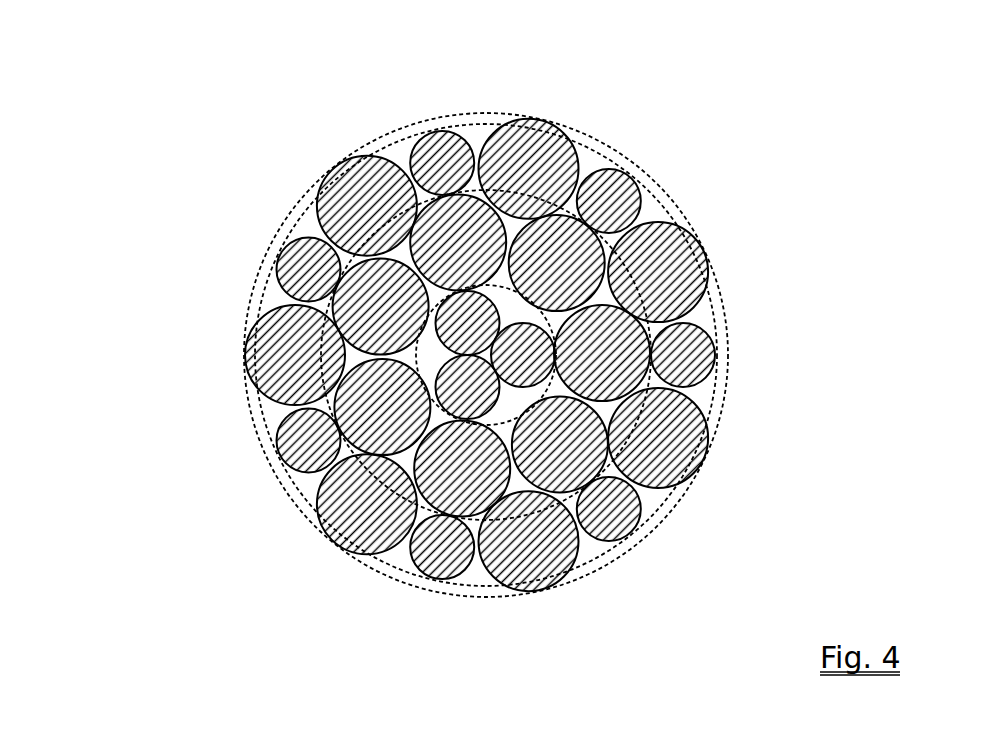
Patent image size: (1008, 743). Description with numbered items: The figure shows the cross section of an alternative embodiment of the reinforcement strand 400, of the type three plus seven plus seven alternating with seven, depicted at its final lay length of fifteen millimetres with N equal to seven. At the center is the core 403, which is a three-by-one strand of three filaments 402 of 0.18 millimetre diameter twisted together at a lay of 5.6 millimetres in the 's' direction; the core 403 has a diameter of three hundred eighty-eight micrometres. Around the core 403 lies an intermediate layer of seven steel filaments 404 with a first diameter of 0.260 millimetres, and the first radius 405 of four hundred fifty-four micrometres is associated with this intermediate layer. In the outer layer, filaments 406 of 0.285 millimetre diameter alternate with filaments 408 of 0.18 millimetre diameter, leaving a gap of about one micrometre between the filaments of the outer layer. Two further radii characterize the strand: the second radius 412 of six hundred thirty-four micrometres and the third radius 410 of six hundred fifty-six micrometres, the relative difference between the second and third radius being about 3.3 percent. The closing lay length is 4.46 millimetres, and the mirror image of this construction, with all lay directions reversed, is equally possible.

The reinforcement strand 400 is at (176, 119).
The filaments 402 is at (320, 289).
The core 403 is at (320, 313).
The intermediate layer steel filaments 404 is at (367, 355).
The first radius 405 is at (363, 355).
The outer layer filaments 406 is at (538, 355).
The outer layer filaments 408 is at (539, 355).
The third radius 410 is at (505, 349).
The second radius 412 is at (537, 355).